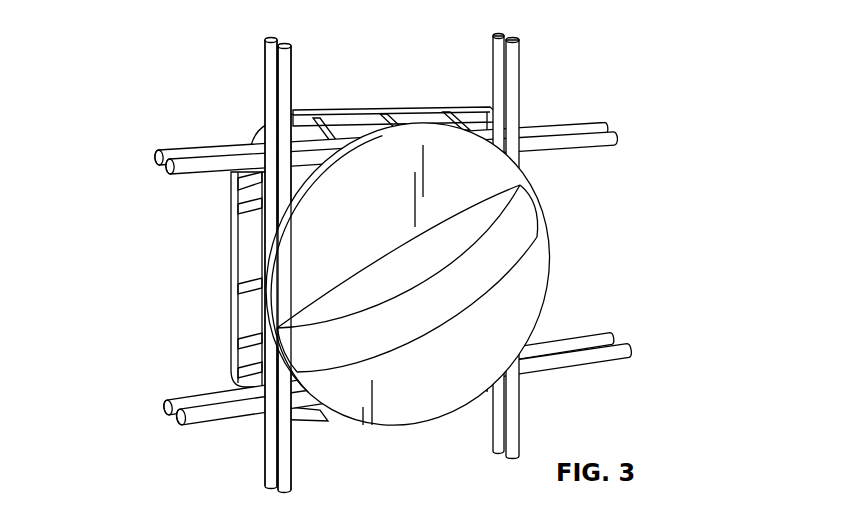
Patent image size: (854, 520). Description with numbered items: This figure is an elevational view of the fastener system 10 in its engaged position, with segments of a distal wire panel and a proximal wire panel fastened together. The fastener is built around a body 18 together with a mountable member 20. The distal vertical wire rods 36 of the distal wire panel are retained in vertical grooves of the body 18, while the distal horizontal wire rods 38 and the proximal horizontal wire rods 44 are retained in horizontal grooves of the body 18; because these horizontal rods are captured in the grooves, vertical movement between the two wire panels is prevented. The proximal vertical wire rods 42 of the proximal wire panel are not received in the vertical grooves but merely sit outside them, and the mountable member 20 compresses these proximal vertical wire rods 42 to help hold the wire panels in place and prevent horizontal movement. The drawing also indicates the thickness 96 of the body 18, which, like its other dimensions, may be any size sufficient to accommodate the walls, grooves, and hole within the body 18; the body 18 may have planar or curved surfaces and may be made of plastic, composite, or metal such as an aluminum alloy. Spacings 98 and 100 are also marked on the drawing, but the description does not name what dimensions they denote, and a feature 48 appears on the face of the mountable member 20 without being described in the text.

The fastener system 10 is at (269, 264).
The body 18 is at (250, 133).
The mountable member 20 is at (258, 256).
The distal vertical wire rods 36 is at (506, 33).
The proximal vertical wire rods 42 is at (522, 62).
The distal horizontal wire rods 38 is at (567, 124).
The proximal horizontal wire rods 44 is at (579, 143).
The curved slot in disc 48 is at (532, 243).
The thickness 96 is at (257, 312).
The spacing between vertical rods 98 is at (498, 0).
The spacing between horizontal rods 100 is at (637, 347).